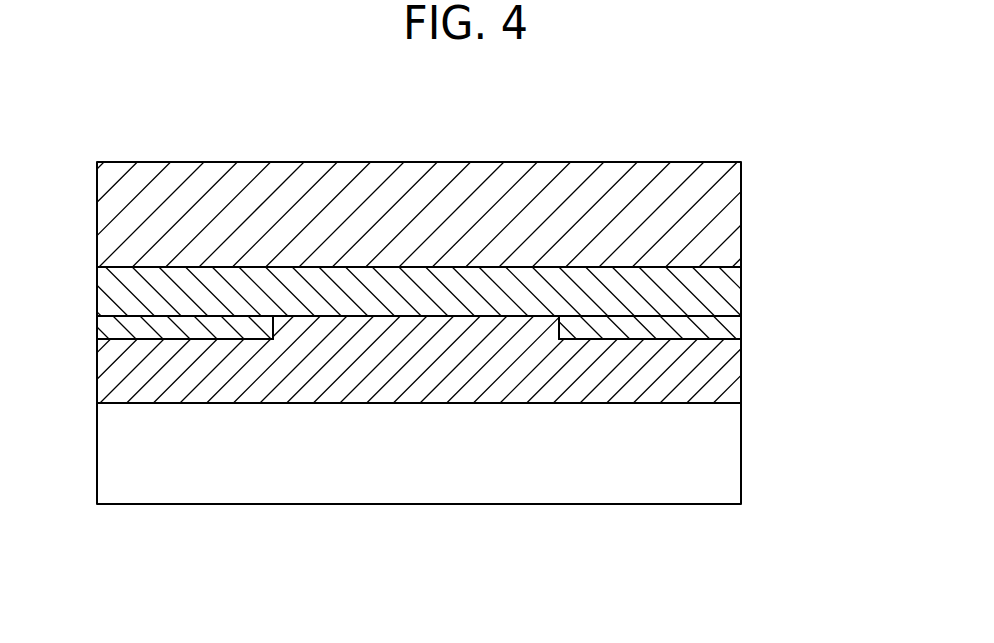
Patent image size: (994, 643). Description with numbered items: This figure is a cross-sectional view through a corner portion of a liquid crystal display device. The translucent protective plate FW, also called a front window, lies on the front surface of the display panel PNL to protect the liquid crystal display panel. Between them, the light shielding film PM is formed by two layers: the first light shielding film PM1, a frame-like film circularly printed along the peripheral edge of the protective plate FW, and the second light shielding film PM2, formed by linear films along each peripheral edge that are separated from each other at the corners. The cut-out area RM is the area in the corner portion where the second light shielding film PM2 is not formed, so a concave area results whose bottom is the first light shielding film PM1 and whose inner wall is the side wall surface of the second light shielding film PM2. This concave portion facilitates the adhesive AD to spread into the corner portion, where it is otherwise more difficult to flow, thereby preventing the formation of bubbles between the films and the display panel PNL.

The protective plate FW is at (571, 183).
The first light shielding film PM1 is at (727, 290).
The second light shielding film PM2 is at (117, 325).
The light shielding film PM is at (848, 303).
The adhesive AD is at (625, 390).
The cut-out area RM is at (555, 412).
The display panel PNL is at (223, 487).